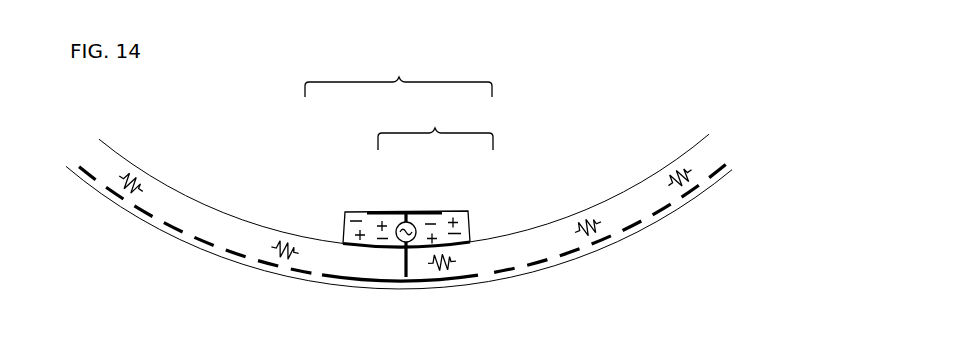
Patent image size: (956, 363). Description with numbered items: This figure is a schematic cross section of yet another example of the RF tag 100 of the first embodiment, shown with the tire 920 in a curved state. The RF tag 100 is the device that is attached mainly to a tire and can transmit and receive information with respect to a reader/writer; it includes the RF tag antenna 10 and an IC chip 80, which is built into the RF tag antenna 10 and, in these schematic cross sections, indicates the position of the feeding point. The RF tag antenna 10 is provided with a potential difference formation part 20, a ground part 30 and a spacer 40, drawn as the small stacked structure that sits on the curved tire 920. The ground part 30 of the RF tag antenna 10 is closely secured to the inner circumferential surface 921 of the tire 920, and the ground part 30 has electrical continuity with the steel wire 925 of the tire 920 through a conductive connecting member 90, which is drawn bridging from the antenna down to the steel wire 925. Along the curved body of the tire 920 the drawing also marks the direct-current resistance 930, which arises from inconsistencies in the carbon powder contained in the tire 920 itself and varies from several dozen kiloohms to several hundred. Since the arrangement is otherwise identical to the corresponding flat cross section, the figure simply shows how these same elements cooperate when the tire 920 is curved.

The RF tag 100 is at (413, 57).
The RF tag antenna 10 is at (435, 125).
The potential difference formation part 20 is at (410, 215).
The ground part 30 is at (436, 215).
The spacer 40 is at (455, 219).
The IC chip 80 is at (386, 225).
The conductive connecting member 90 is at (404, 267).
The tire 920 is at (198, 219).
The inner circumferential surface 921 is at (137, 167).
The steel wire 925 is at (497, 274).
The direct-current resistance 930 is at (580, 222).